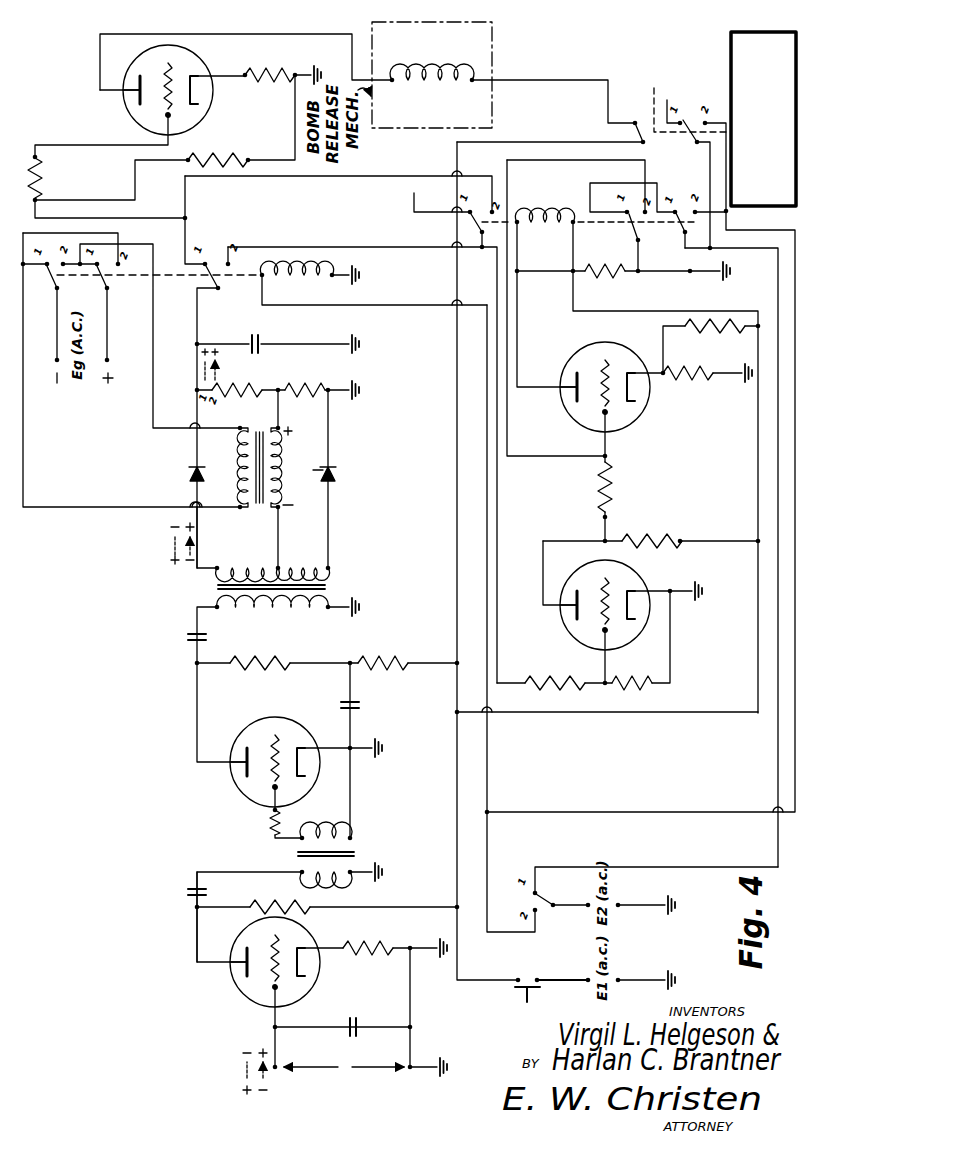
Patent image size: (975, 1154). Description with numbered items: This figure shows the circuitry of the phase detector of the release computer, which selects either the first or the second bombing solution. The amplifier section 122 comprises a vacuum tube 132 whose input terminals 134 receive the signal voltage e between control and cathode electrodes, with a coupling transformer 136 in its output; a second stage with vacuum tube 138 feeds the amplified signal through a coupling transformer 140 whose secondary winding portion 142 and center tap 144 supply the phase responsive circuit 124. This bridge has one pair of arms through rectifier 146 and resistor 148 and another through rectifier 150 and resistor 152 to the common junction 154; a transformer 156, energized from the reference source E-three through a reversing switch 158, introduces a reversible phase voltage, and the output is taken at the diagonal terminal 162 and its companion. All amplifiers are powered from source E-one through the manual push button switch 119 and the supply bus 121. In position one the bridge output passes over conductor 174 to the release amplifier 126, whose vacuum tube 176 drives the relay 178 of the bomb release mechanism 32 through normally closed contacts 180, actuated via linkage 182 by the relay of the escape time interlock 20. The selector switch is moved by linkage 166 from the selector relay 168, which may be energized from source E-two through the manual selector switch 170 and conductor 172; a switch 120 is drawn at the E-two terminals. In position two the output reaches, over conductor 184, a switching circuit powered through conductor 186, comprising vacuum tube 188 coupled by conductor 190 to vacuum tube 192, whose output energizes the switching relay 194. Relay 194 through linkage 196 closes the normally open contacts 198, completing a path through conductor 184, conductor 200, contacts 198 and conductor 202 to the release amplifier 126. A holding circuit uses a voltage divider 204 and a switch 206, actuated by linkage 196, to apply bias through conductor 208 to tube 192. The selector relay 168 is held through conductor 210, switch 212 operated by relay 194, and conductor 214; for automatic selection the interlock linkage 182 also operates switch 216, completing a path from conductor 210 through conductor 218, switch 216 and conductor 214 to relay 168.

The escape time interlock 20 is at (731, 92).
The bomb release mechanism 32 is at (493, 52).
The manual push button switch 119 is at (517, 988).
The power switch 120 is at (553, 912).
The supply bus 121 is at (458, 955).
The amplifier section 122 is at (195, 922).
The phase responsive circuit 124 is at (192, 516).
The release amplifier 126 is at (98, 58).
The vacuum tube 132 is at (242, 986).
The input terminals 134 is at (286, 1072).
The coupling transformer 136 is at (356, 852).
The vacuum tube 138 is at (239, 778).
The coupling transformer 140 is at (212, 587).
The secondary winding portion 142 is at (233, 564).
The center tap 144 is at (300, 564).
The rectifier 146 is at (192, 473).
The resistor 148 is at (236, 388).
The rectifier 150 is at (337, 473).
The resistor 152 is at (283, 428).
The common junction 154 is at (298, 388).
The transformer 156 is at (259, 562).
The reversing switch 158 is at (53, 284).
The diagonal terminal 162 is at (252, 341).
The linkage 166 is at (113, 285).
The selector relay 168 is at (266, 270).
The manual selector switch 170 is at (222, 282).
The conductor 172 is at (489, 897).
The conductor 174 is at (190, 236).
The vacuum tube 176 is at (128, 72).
The relay 178 is at (398, 70).
The normally closed switch contacts 180 is at (638, 130).
The linkage 182 is at (681, 92).
The conductor 184 is at (305, 262).
The conductor 186 is at (563, 606).
The vacuum tube 188 is at (542, 573).
The conductor 190 is at (603, 508).
The vacuum tube 192 is at (568, 391).
The switching relay 194 is at (519, 216).
The linkage 196 is at (566, 216).
The normally open switch contacts 198 is at (466, 213).
The conductor 200 is at (481, 249).
The conductor 202 is at (404, 178).
The voltage divider 204 is at (605, 270).
The switch 206 is at (634, 228).
The conductor 208 is at (508, 441).
The conductor 210 is at (570, 867).
The switch 212 is at (679, 215).
The conductor 214 is at (792, 738).
The switch 216 is at (688, 112).
The conductor 218 is at (710, 196).